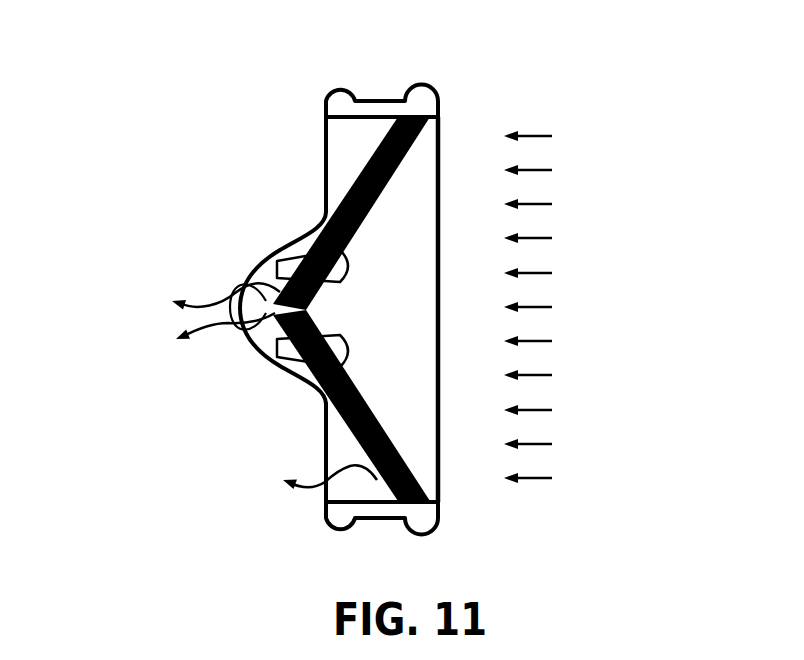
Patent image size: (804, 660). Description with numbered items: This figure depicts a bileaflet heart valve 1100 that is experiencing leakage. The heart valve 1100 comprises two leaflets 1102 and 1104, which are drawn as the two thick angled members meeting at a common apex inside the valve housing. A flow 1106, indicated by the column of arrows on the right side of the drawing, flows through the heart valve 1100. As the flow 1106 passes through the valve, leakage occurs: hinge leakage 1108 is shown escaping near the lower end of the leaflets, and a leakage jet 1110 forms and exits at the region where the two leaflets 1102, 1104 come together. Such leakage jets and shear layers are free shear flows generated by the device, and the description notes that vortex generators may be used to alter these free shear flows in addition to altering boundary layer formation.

The heart valve 1100 is at (410, 52).
The leaflet 1102 is at (362, 172).
The leaflet 1104 is at (348, 425).
The flow 1106 is at (583, 281).
The hinge leakage 1108 is at (270, 481).
The leakage jet 1110 is at (153, 312).